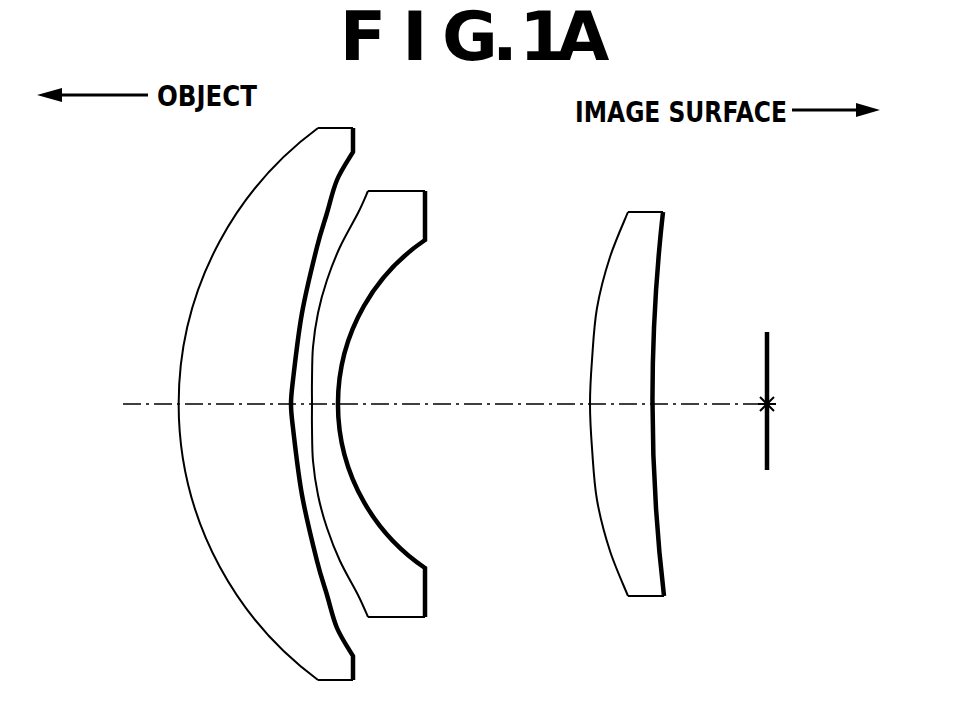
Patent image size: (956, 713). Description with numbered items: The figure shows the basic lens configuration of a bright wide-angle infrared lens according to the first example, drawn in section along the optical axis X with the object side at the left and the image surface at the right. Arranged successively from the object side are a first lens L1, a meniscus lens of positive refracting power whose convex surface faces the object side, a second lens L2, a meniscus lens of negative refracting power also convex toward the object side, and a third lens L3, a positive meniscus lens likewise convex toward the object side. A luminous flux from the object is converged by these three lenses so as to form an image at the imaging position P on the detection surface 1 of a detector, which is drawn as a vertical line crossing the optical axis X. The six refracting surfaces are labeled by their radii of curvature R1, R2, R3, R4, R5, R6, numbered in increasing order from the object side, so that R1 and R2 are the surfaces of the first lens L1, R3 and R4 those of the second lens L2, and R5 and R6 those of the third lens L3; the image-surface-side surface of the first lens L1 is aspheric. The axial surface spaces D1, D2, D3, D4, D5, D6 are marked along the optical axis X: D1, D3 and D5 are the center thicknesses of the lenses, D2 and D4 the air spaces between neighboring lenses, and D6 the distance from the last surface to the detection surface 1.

The first lens L1 is at (278, 404).
The second lens L2 is at (398, 431).
The third lens L3 is at (627, 434).
The radius of curvature of first lens surface R1 is at (193, 292).
The radius of curvature of second lens surface R2 is at (354, 158).
The radius of curvature of third lens surface R3 is at (363, 606).
The radius of curvature of fourth lens surface R4 is at (369, 305).
The radius of curvature of fifth lens surface R5 is at (597, 318).
The radius of curvature of sixth lens surface R6 is at (656, 322).
The axial surface space D1 is at (241, 406).
The axial surface space D2 is at (300, 400).
The axial surface space D3 is at (323, 408).
The axial surface space D4 is at (470, 407).
The axial surface space D5 is at (620, 407).
The axial surface space D6 is at (695, 407).
The optical axis X is at (143, 405).
The imaging position P is at (772, 405).
The detection surface 1 is at (773, 421).